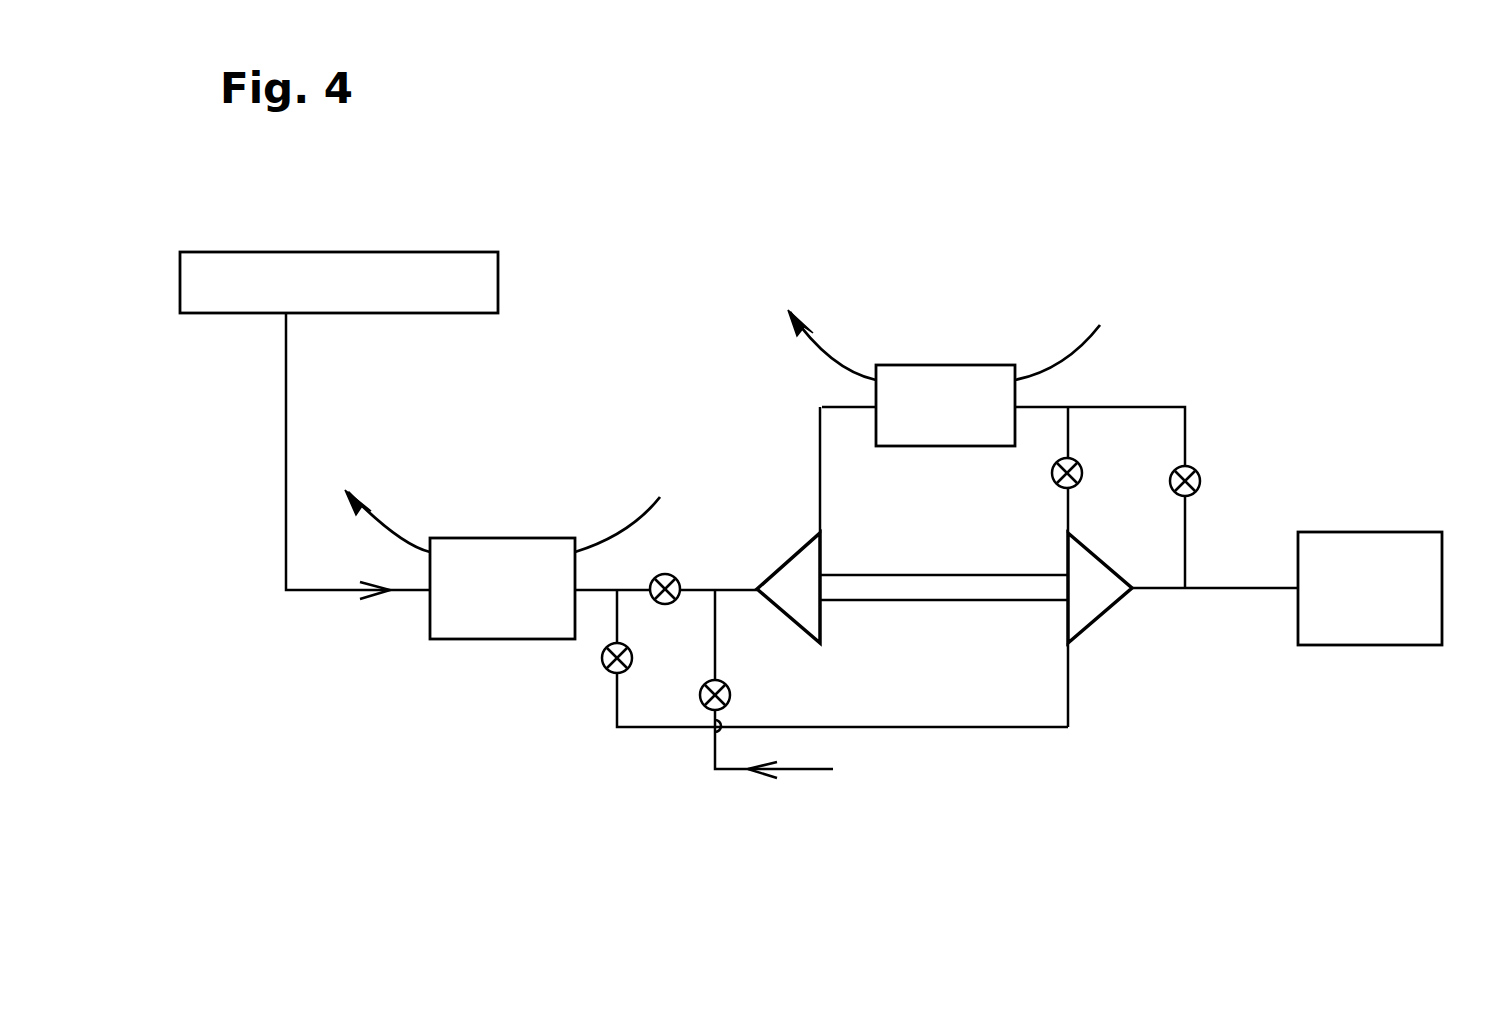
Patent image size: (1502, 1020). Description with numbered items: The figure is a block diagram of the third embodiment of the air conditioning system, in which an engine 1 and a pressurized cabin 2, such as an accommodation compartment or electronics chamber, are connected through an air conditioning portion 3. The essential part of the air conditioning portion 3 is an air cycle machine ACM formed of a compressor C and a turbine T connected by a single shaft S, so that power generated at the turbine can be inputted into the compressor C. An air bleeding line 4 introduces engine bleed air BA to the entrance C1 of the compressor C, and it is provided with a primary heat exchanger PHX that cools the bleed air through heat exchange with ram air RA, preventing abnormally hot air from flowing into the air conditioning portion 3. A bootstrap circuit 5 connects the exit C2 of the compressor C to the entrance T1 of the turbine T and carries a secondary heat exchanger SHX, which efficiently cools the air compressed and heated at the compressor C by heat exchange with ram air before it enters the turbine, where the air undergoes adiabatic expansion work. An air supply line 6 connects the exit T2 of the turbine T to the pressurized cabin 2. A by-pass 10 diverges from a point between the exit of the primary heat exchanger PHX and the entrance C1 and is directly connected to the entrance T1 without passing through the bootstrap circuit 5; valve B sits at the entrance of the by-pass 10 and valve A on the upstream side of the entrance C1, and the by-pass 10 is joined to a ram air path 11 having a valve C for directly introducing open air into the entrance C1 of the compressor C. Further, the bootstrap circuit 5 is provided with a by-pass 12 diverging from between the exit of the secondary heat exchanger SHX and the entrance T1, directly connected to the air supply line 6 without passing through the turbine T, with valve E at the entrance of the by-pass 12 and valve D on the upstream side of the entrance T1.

The engine 1 is at (323, 252).
The pressurized cabin 2 is at (1368, 532).
The air conditioning portion 3 is at (1097, 677).
The air bleeding line 4 is at (331, 606).
The bootstrap circuit 5 is at (1048, 389).
The air supply line 6 is at (1233, 575).
The by-pass 10 is at (660, 748).
The ram air path 11 is at (758, 790).
The by-pass 12 is at (1170, 398).
The valve A is at (665, 574).
The valve B is at (613, 674).
The compressor C is at (725, 699).
The valve D is at (1078, 470).
The valve E is at (1193, 474).
The entrance of the compressor C1 is at (757, 587).
The exit of the compressor C2 is at (823, 534).
The entrance of the turbine T1 is at (1069, 533).
The exit of the turbine T2 is at (1131, 590).
The shaft S is at (960, 603).
The air cycle machine ACM is at (959, 595).
The primary heat exchanger PHX is at (495, 538).
The secondary heat exchanger SHX is at (963, 365).
The ram air RA is at (352, 489).
The engine bleed air BA is at (370, 604).